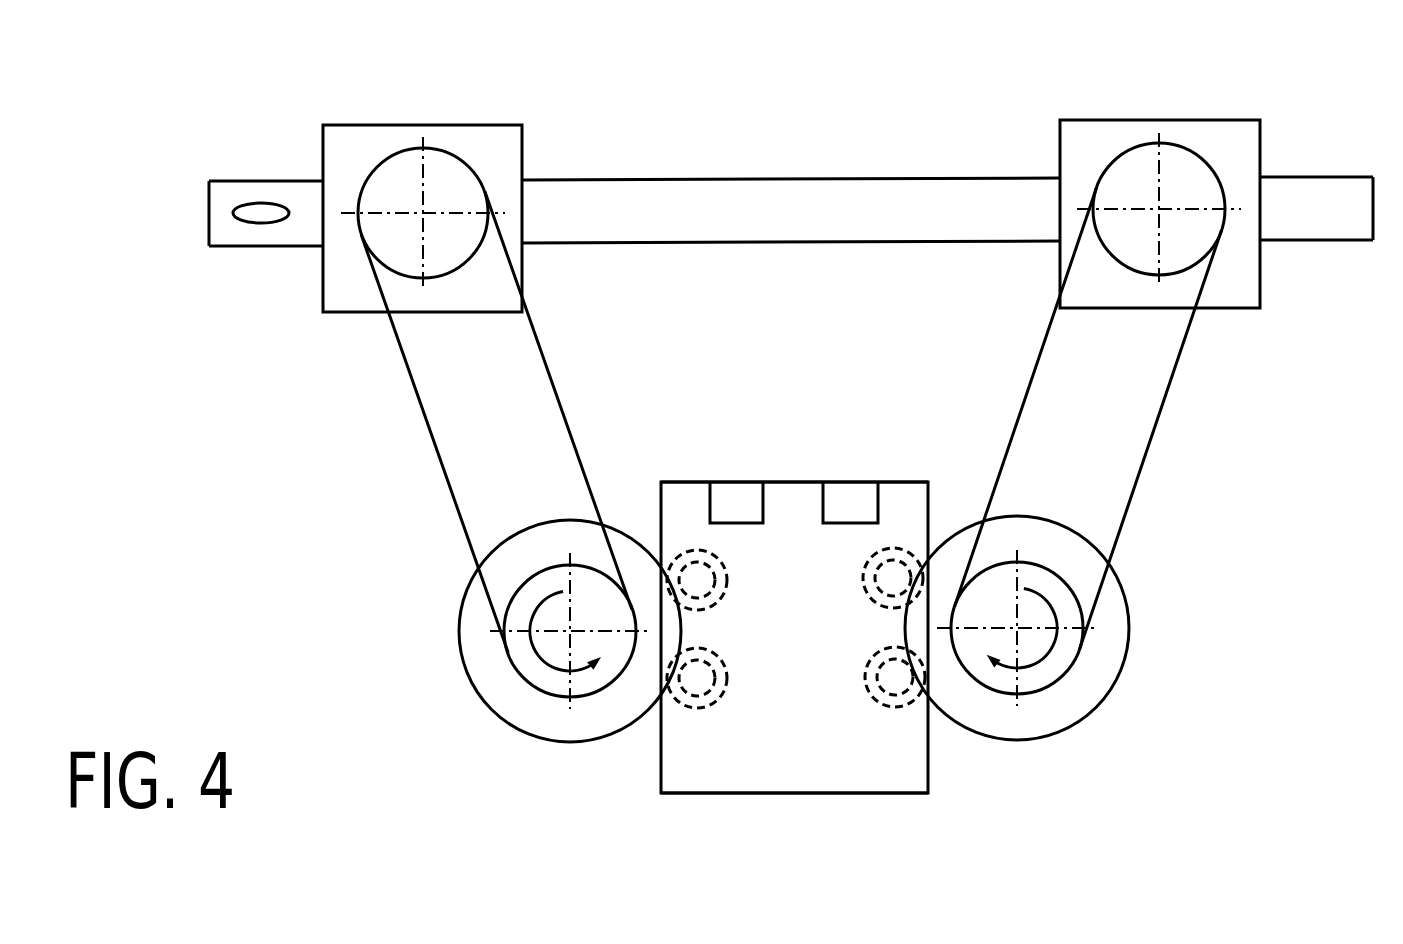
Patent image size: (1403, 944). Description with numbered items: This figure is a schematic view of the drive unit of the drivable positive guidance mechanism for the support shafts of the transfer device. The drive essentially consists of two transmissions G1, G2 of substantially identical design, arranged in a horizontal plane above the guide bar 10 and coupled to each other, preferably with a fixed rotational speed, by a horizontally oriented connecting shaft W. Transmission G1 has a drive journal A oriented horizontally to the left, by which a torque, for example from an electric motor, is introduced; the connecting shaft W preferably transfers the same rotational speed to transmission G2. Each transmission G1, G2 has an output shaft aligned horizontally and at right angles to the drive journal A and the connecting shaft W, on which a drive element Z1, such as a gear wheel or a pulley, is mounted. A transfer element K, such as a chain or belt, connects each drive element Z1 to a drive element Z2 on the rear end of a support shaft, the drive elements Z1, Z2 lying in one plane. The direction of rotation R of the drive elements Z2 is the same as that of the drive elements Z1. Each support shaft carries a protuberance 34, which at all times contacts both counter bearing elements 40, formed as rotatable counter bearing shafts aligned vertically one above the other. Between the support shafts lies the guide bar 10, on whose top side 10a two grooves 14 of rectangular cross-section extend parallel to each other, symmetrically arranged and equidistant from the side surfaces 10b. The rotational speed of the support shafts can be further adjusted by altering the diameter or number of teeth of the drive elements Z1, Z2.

The connecting shaft W is at (789, 190).
The drive journal A is at (253, 235).
The transmission G1 is at (463, 142).
The transmission G2 is at (1198, 140).
The drive element Z1 is at (393, 175).
The drive element Z2 is at (550, 690).
The transfer element K is at (555, 377).
The protuberance 34 is at (458, 622).
The direction of rotation R is at (543, 663).
The guide bar 10 is at (818, 775).
The top side 10a is at (796, 480).
The side surface 10b is at (662, 790).
The groove 14 is at (733, 493).
The counter bearing element 40 is at (690, 707).